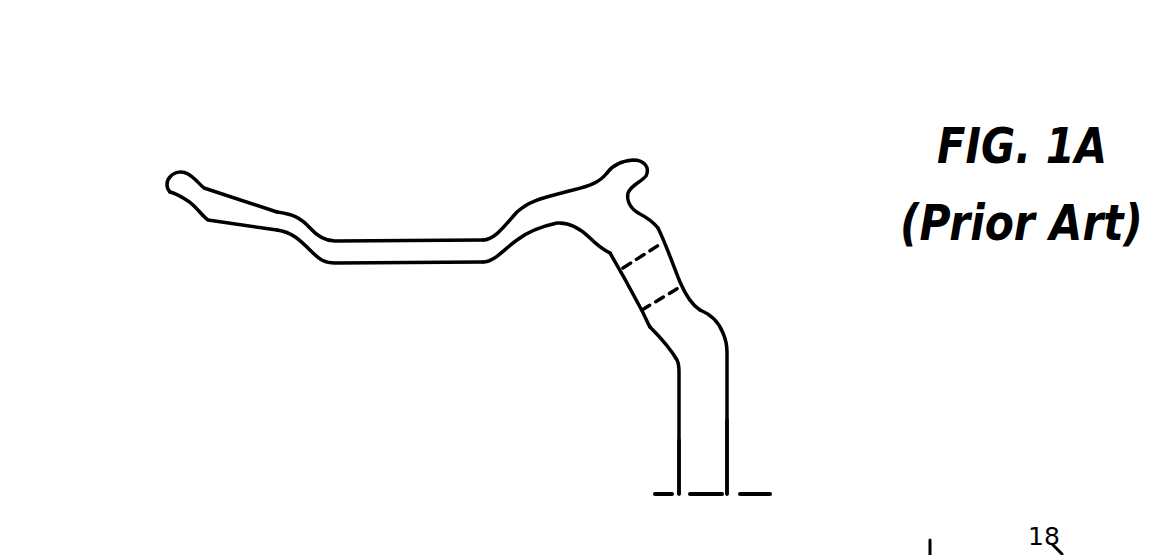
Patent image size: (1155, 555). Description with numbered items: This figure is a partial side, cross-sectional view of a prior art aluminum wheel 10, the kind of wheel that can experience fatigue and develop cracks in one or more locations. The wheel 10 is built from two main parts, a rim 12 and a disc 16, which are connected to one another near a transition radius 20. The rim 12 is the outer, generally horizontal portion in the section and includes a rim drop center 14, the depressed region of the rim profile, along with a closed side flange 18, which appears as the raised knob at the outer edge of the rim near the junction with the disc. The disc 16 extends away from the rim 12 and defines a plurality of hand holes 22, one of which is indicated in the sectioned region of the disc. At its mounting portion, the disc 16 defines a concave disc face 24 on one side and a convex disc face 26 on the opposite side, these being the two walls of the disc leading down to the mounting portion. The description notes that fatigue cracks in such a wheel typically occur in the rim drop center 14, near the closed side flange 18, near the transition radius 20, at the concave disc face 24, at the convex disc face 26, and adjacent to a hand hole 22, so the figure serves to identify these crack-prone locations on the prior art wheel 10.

The prior art wheel 10 is at (790, 117).
The rim 12 is at (198, 177).
The rim drop center 14 is at (412, 242).
The disc 16 is at (727, 337).
The closed side flange 18 is at (632, 158).
The transition radius 20 is at (590, 240).
The hand hole 22 is at (694, 254).
The concave disc face 24 is at (678, 457).
The convex disc face 26 is at (728, 440).